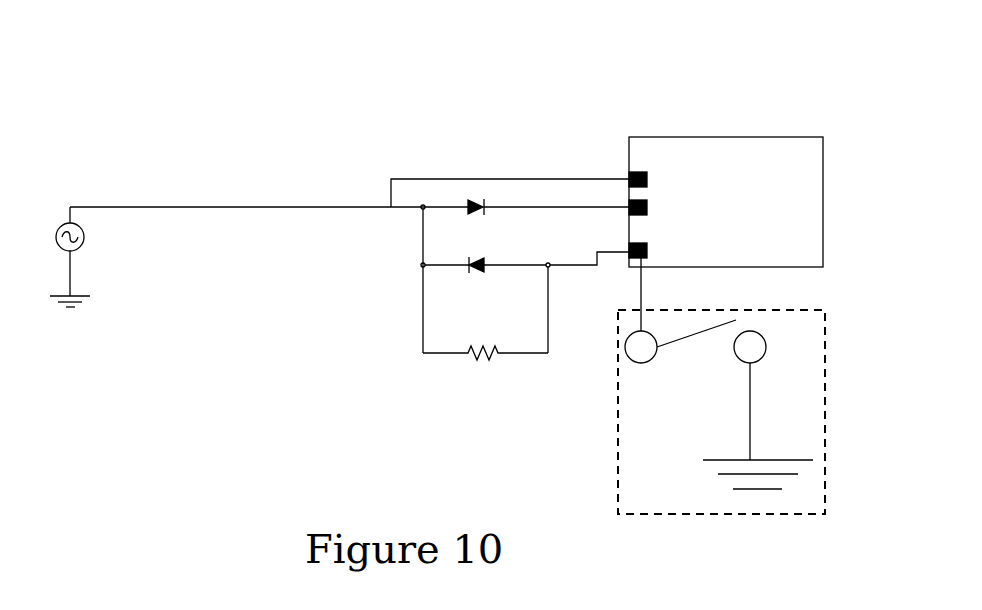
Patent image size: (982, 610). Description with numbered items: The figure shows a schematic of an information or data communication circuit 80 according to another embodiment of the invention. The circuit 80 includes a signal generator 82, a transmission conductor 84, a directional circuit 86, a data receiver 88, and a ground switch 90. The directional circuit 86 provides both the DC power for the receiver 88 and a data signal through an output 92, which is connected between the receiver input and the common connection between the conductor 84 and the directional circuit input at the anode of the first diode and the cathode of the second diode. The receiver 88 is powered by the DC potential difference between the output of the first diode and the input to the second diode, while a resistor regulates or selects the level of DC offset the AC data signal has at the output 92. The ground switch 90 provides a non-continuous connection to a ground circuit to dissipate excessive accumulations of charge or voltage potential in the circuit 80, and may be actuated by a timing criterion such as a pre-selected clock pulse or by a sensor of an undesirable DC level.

The data communication circuit 80 is at (313, 335).
The signal generator 82 is at (70, 207).
The transmission conductor 84 is at (233, 207).
The directional circuit 86 is at (423, 266).
The data receiver 88 is at (737, 140).
The ground switch 90 is at (838, 308).
The output 92 is at (440, 179).